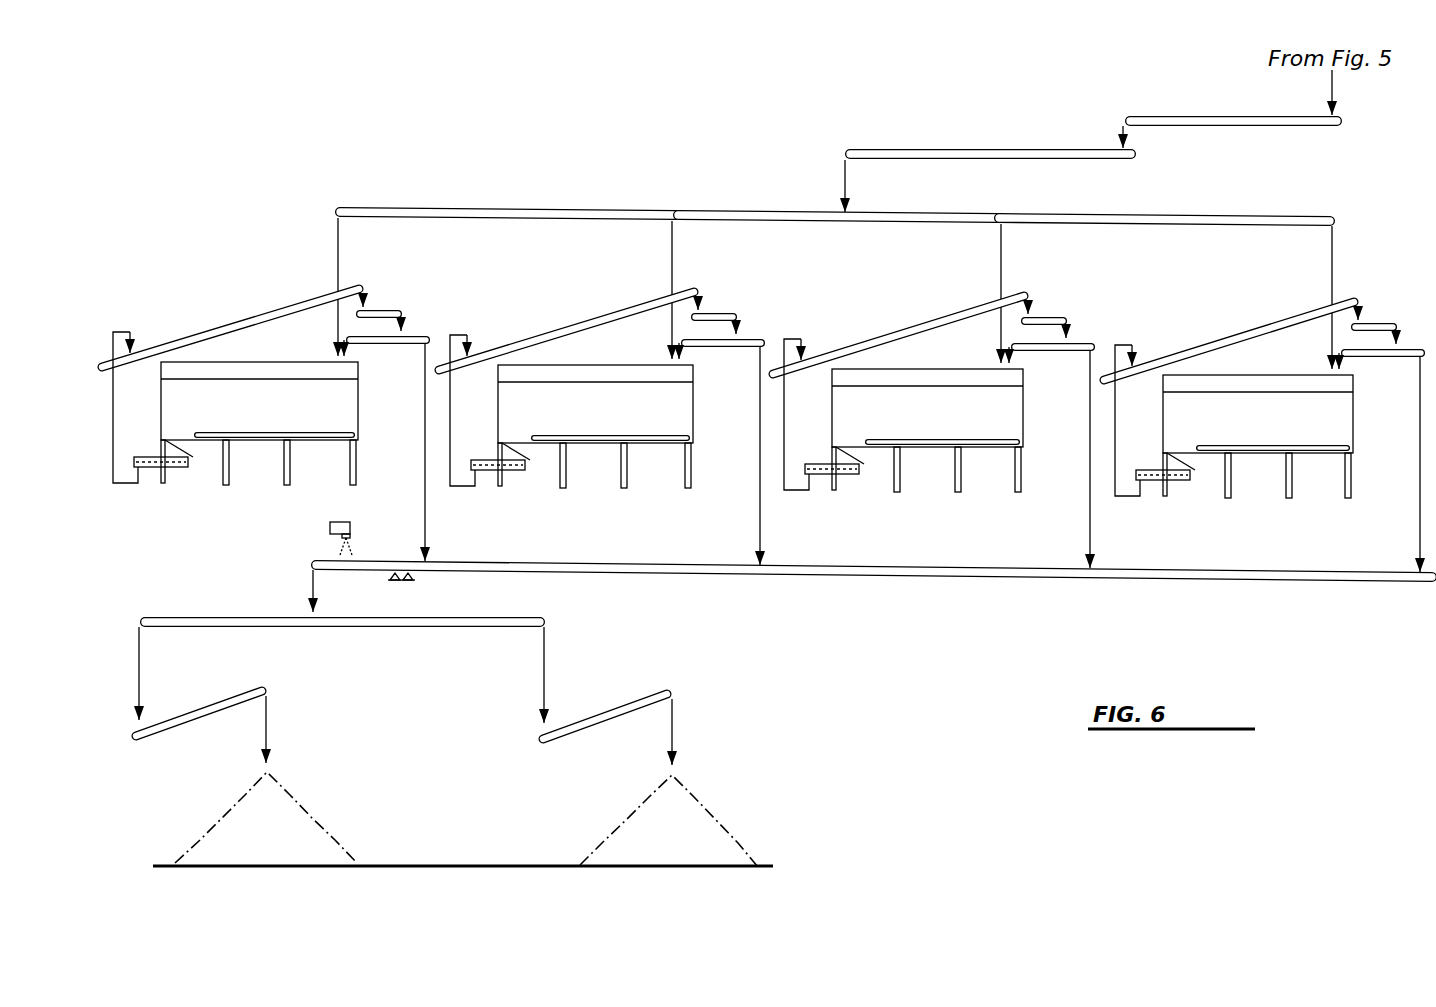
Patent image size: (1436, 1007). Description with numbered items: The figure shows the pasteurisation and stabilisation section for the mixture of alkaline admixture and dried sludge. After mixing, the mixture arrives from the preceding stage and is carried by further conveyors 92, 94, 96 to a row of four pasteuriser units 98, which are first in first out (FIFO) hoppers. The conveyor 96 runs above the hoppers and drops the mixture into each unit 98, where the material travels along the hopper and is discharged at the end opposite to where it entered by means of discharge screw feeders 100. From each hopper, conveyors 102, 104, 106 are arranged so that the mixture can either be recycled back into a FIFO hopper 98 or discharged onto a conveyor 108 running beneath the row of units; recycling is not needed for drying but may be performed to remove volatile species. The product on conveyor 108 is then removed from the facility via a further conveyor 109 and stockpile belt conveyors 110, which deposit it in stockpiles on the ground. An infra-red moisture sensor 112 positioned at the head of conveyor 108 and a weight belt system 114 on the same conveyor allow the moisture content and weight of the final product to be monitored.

The conveyor 92 is at (1207, 118).
The conveyor 94 is at (978, 150).
The conveyor 96 is at (650, 212).
The pasteuriser unit 98 is at (733, 415).
The discharge screw feeder 100 is at (177, 467).
The conveyor 102 is at (223, 330).
The conveyor 104 is at (380, 315).
The conveyor 106 is at (380, 344).
The conveyor 108 is at (848, 574).
The stacking conveyor 109 is at (425, 627).
The stockpile belt conveyor 110 is at (212, 707).
The infra-red moisture sensor 112 is at (327, 527).
The weight belt system 114 is at (402, 581).